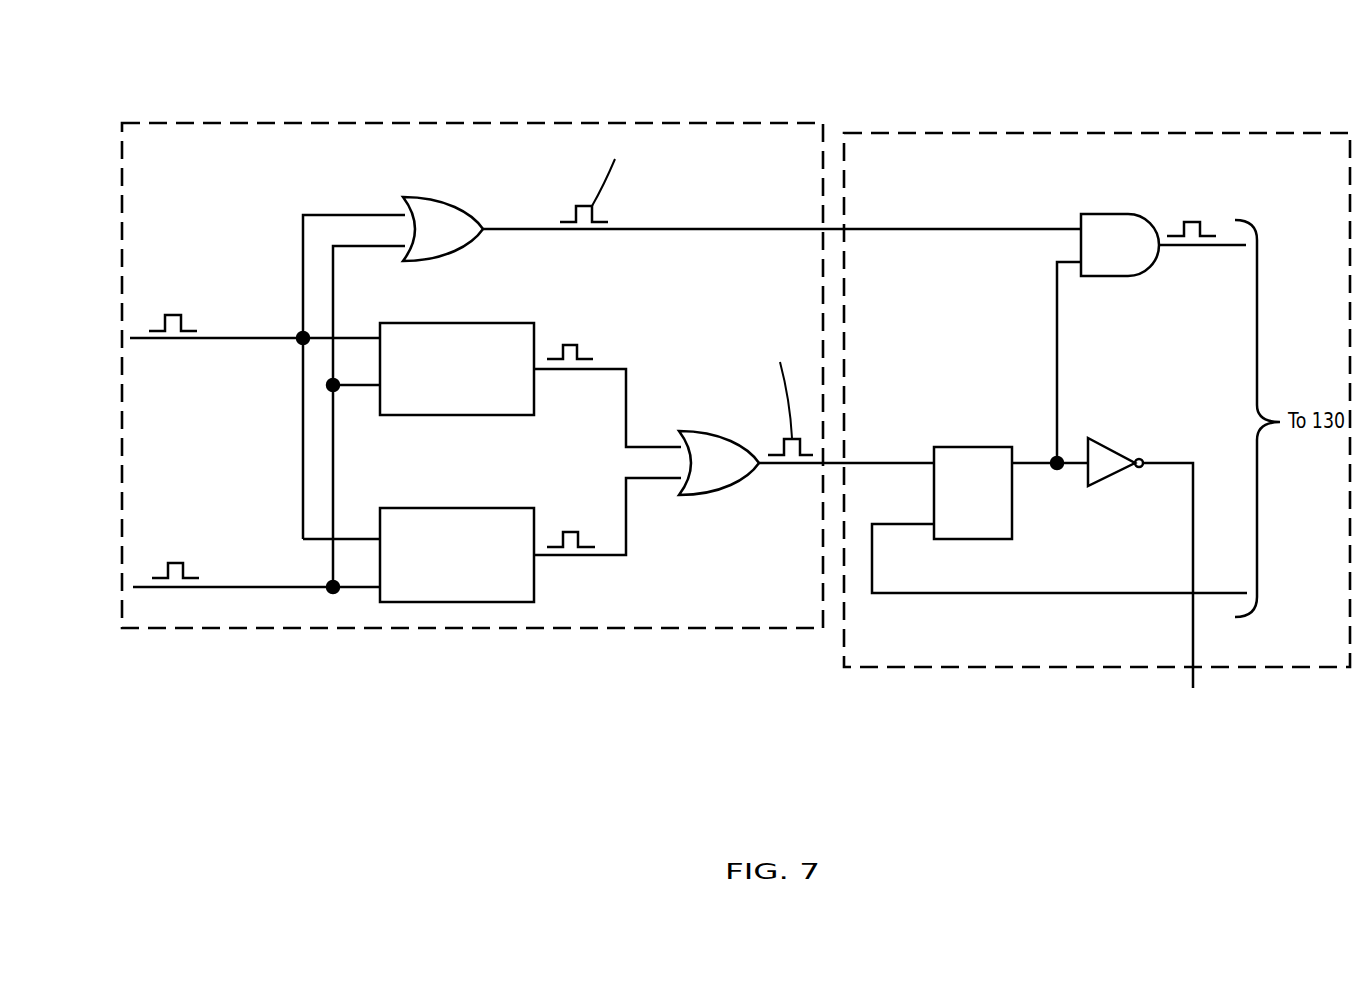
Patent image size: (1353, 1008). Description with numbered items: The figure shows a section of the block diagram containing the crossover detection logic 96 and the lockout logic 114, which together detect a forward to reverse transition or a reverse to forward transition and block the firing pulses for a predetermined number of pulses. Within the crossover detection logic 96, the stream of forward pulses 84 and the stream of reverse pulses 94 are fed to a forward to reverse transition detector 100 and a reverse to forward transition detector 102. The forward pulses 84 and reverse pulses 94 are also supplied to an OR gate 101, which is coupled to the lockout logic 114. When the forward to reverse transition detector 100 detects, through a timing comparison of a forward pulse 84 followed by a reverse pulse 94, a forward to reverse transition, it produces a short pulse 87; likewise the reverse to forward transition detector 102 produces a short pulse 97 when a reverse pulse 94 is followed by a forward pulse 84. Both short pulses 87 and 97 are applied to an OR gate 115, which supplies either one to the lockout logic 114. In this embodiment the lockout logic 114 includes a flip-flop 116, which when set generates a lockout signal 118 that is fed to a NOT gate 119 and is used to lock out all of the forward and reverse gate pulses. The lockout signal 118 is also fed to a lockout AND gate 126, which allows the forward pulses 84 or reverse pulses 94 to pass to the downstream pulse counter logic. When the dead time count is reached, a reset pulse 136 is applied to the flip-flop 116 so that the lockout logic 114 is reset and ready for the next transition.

The crossover detection logic 96 is at (524, 100).
The lockout logic 114 is at (967, 118).
The forward pulses 84 is at (170, 313).
The reverse pulses 94 is at (173, 562).
The OR gate 101 is at (442, 198).
The forward to reverse transition detector 100 is at (443, 323).
The reverse to forward transition detector 102 is at (452, 508).
The short pulse 87 is at (570, 347).
The short pulse 97 is at (570, 530).
The OR gate 115 is at (731, 433).
The flip-flop 116 is at (975, 447).
The lockout signal 118 is at (1058, 315).
The NOT gate 119 is at (1110, 443).
The lockout AND gate 126 is at (1120, 214).
The reset pulse 136 is at (968, 593).